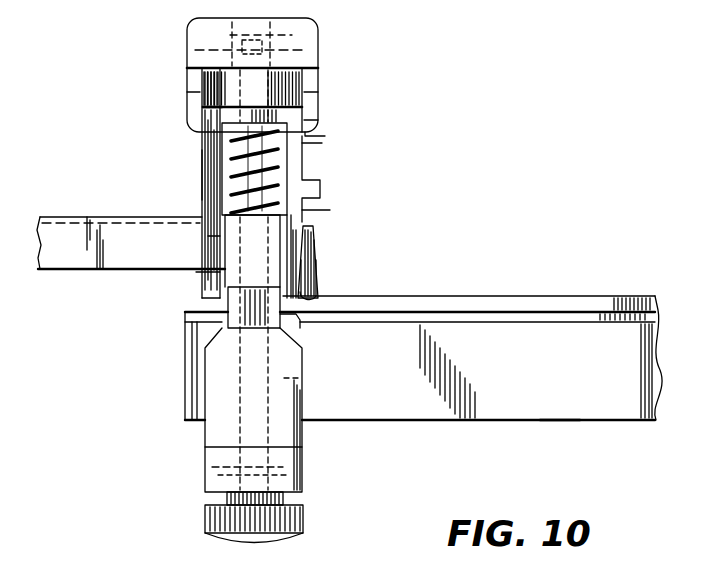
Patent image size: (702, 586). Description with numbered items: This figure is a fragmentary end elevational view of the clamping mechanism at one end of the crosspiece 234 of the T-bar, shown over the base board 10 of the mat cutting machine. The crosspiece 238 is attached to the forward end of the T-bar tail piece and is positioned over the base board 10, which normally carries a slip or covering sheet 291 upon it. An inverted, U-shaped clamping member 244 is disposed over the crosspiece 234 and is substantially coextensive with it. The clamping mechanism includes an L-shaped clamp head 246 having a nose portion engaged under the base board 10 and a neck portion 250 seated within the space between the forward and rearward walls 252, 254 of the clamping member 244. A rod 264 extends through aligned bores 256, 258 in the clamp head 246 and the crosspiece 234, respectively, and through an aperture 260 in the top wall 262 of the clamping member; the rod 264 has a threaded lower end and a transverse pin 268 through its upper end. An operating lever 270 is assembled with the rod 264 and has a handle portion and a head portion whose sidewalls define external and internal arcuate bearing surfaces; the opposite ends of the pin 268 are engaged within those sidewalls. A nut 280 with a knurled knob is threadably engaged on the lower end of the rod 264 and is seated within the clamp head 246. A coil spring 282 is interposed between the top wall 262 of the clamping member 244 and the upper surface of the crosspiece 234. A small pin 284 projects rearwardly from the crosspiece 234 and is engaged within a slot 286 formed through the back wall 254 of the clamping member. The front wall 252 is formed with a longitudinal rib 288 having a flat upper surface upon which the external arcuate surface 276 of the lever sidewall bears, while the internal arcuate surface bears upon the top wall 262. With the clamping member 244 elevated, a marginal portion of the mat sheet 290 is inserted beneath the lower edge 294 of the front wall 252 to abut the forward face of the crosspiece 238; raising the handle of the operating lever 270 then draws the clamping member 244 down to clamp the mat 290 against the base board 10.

The base board 10 is at (556, 425).
The crosspiece 234 is at (78, 258).
The crosspiece 238 is at (281, 242).
The clamping member 244 is at (196, 173).
The clamp head 246 is at (222, 432).
The neck portion 250 is at (296, 326).
The forward wall 252 is at (305, 226).
The rearward wall 254 is at (213, 188).
The bore 256 is at (300, 378).
The bore 258 is at (228, 300).
The aperture 260 is at (320, 112).
The top wall 262 is at (203, 107).
The rod 264 is at (282, 158).
The transverse pin 268 is at (318, 47).
The operating lever 270 is at (183, 62).
The external arcuate bearing surface 276 is at (320, 136).
The nut 280 is at (310, 528).
The coil spring 282 is at (303, 210).
The small pin 284 is at (218, 238).
The slot 286 is at (196, 272).
The rib 288 is at (322, 144).
The mat sheet 290 is at (584, 300).
The covering sheet 291 is at (486, 314).
The lower edge 294 is at (312, 298).